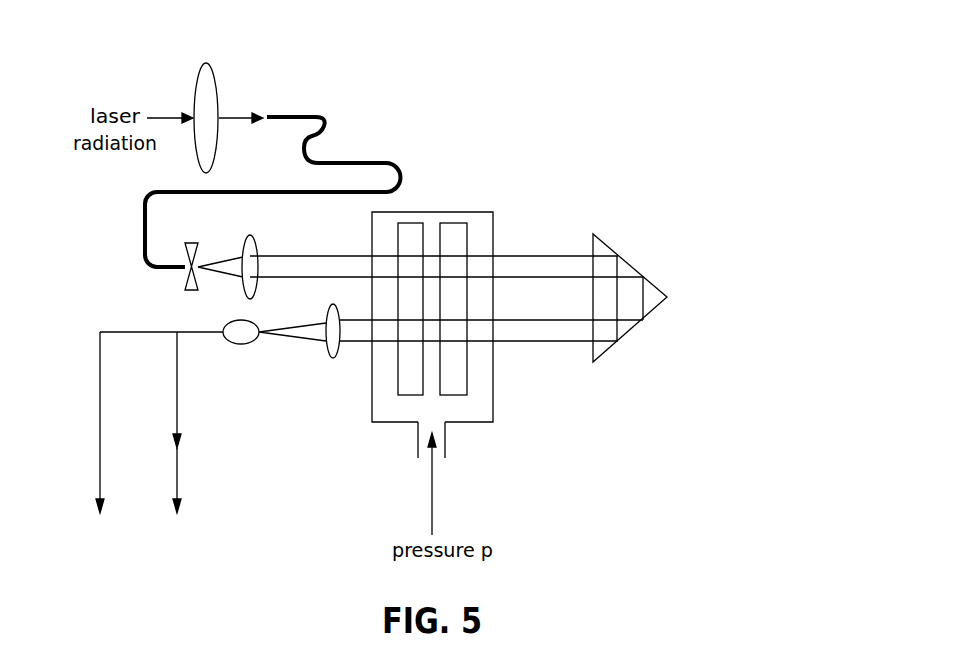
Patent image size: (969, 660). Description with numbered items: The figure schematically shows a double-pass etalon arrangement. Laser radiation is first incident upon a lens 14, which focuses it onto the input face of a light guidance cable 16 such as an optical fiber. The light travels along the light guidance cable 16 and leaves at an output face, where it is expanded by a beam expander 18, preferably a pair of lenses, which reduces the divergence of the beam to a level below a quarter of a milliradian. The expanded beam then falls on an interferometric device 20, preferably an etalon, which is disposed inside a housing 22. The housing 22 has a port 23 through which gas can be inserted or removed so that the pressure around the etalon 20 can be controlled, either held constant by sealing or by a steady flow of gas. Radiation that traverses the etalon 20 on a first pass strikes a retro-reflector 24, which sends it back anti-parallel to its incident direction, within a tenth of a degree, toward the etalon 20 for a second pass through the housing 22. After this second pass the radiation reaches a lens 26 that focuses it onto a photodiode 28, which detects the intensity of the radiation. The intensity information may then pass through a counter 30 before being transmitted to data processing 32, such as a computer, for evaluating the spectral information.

The lens 14 is at (202, 92).
The light guidance cable 16 is at (272, 185).
The beam expander 18 is at (251, 253).
The interferometric device 20 is at (467, 238).
The housing 22 is at (495, 385).
The port 23 is at (446, 445).
The retro-reflector 24 is at (626, 263).
The lens 26 is at (333, 358).
The photodiode 28 is at (240, 359).
The counter 30 is at (214, 422).
The data processing 32 is at (139, 452).